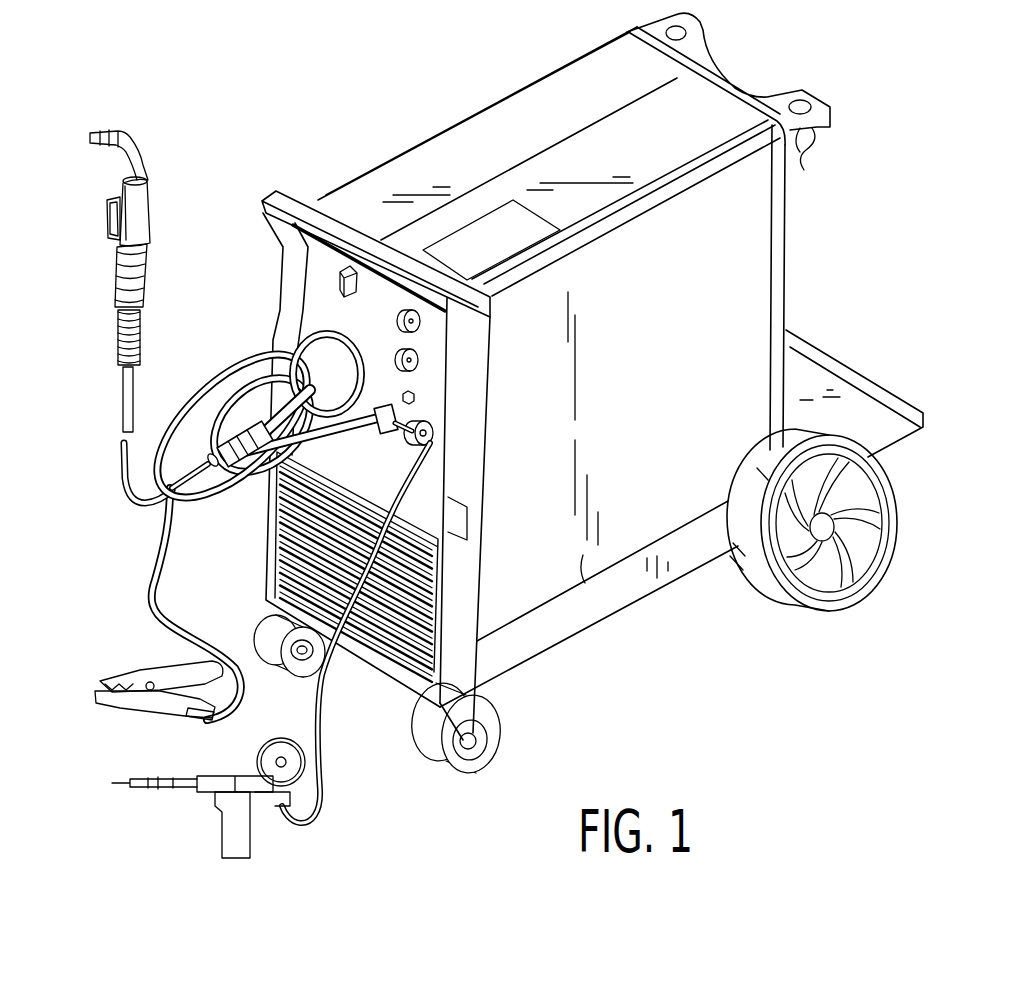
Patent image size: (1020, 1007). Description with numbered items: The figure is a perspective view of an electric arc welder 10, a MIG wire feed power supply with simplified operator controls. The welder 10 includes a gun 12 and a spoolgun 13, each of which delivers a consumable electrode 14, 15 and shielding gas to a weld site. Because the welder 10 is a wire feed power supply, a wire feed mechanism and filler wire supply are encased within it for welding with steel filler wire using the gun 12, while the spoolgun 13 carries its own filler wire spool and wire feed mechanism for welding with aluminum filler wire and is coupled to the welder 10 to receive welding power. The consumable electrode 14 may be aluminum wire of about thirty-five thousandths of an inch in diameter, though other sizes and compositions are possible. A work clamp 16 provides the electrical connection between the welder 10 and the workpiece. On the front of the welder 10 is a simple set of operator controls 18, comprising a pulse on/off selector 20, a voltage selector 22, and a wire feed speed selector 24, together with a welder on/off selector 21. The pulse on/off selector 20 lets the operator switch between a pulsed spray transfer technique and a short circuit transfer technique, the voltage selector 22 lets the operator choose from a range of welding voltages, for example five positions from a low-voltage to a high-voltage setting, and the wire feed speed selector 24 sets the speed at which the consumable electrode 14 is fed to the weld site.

The electric arc welder 10 is at (497, 395).
The gun 12 is at (106, 316).
The spoolgun 13 is at (196, 816).
The consumable electrode 14 is at (432, 432).
The consumable electrode 15 is at (140, 783).
The work clamp 16 is at (127, 666).
The operator controls 18 is at (268, 282).
The pulse on/off selector 20 is at (342, 277).
The welder on/off selector 21 is at (416, 397).
The voltage selector 22 is at (424, 320).
The wire feed speed selector 24 is at (421, 360).